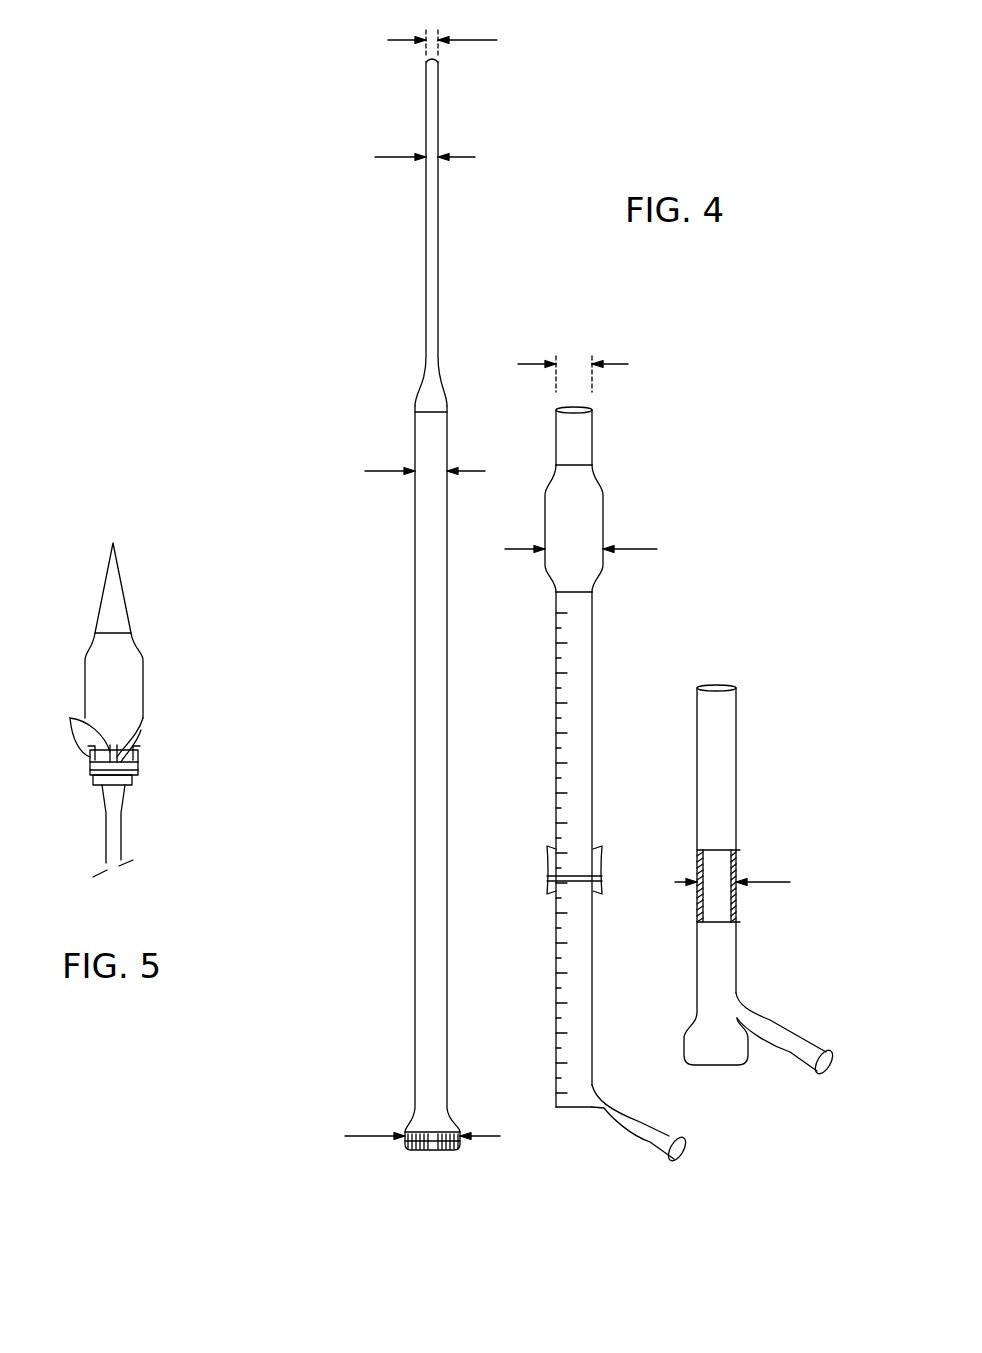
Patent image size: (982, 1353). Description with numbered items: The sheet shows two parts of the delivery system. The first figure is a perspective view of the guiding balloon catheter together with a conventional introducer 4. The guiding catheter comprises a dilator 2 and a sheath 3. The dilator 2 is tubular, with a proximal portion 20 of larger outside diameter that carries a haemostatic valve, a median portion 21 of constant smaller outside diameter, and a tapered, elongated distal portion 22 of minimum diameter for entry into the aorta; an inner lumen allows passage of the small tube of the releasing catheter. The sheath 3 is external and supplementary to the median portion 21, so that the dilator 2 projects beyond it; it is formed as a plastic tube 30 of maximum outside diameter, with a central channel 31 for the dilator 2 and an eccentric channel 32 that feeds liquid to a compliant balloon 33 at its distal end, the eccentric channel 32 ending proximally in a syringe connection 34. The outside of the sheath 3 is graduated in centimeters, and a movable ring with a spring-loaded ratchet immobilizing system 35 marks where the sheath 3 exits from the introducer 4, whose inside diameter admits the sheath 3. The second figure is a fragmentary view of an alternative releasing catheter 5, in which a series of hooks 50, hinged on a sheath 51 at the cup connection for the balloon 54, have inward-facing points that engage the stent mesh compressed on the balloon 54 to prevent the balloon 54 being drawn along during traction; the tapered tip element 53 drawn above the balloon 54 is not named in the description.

In FIG. 4, the dilator 2 is at (400, 646).
In FIG. 4, the proximal portion 20 is at (432, 1150).
In FIG. 4, the median portion 21 is at (415, 963).
In FIG. 4, the distal portion 22 is at (426, 292).
In FIG. 4, the sheath 3 is at (611, 640).
In FIG. 4, the tube 30 is at (592, 447).
In FIG. 4, the central channel 31 is at (592, 410).
In FIG. 4, the balloon 33 is at (600, 515).
In FIG. 4, the immobilizing system 35 is at (602, 862).
In FIG. 4, the eccentric channel 32 is at (600, 1117).
In FIG. 4, the syringe connection 34 is at (673, 1130).
In FIG. 4, the introducer 4 is at (751, 960).
In FIG. 5, the releasing catheter 5 is at (143, 830).
In FIG. 5, the hooks 50 is at (70, 718).
In FIG. 5, the sheath 51 is at (132, 735).
In FIG. 5, the tip 53 is at (145, 675).
In FIG. 5, the balloon 54 is at (93, 786).